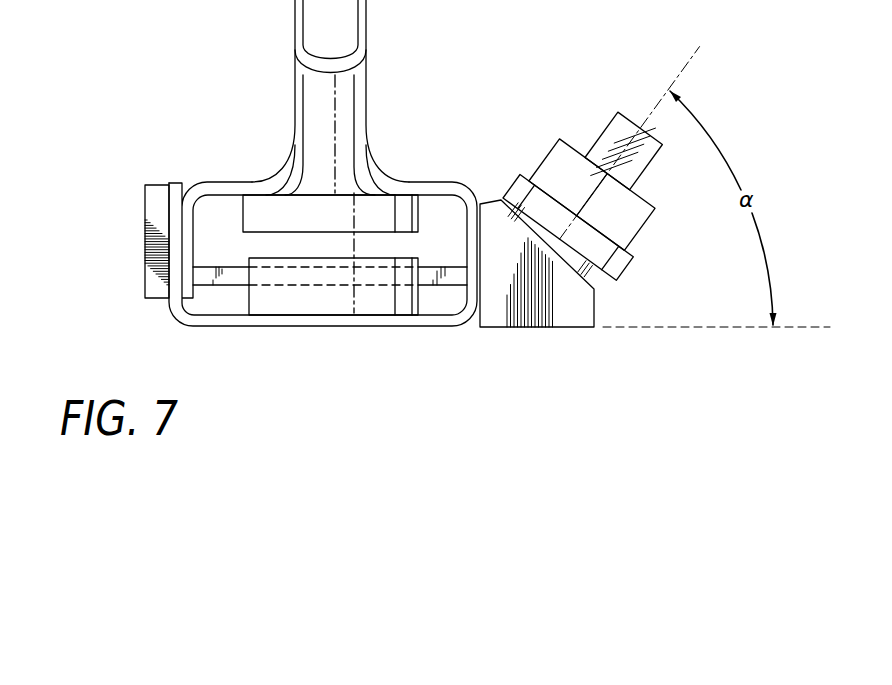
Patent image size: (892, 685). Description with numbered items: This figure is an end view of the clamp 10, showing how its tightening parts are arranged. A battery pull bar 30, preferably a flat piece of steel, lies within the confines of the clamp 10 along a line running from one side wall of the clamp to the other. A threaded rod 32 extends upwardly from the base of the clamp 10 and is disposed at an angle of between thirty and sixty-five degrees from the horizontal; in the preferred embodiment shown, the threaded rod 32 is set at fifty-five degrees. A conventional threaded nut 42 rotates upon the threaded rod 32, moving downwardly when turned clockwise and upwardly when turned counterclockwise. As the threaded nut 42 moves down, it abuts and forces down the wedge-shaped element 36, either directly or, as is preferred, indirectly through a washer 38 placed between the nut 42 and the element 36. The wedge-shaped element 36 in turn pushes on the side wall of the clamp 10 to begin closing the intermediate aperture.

The clamp 10 is at (112, 80).
The battery pull bar 30 is at (217, 273).
The threaded rod 32 is at (610, 123).
The wedge-shaped element 36 is at (502, 351).
The washer 38 is at (624, 264).
The threaded nut 42 is at (638, 222).